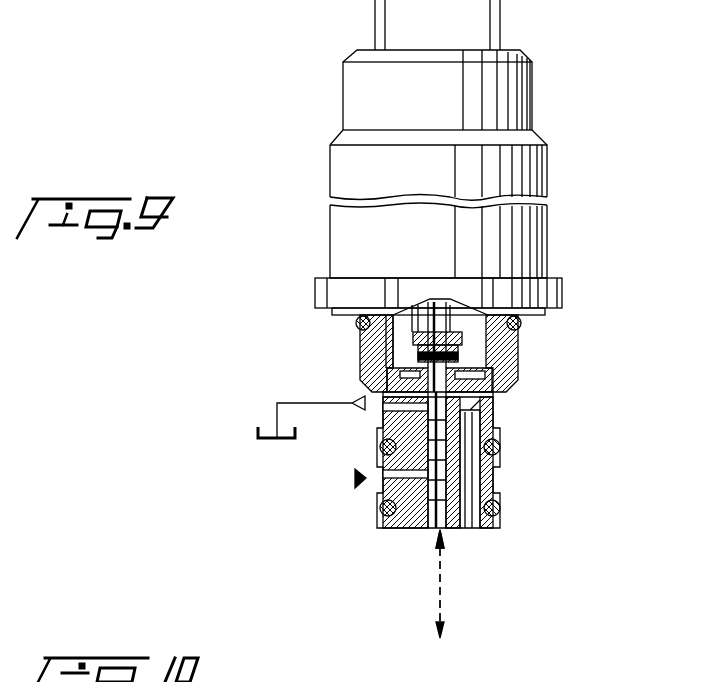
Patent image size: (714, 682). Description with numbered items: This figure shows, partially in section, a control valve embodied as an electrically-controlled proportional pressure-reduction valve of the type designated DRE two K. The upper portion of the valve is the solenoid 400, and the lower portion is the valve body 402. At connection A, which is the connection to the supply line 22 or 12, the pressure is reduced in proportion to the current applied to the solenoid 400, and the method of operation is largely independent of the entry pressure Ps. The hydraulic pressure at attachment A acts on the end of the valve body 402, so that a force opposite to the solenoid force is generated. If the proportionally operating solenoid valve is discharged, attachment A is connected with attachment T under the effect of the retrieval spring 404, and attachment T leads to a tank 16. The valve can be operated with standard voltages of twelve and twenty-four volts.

The solenoid 400 is at (527, 90).
The retrieval spring 404 is at (453, 362).
The valve body 402 is at (463, 497).
The tank 16 is at (258, 436).
The line 22 is at (445, 599).
The line 12 is at (440, 576).